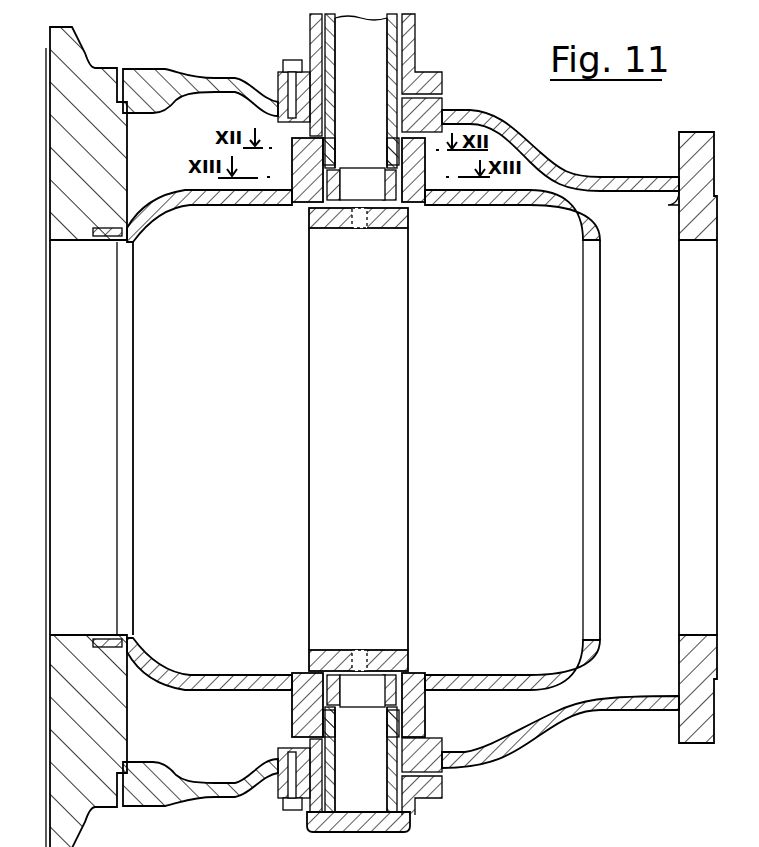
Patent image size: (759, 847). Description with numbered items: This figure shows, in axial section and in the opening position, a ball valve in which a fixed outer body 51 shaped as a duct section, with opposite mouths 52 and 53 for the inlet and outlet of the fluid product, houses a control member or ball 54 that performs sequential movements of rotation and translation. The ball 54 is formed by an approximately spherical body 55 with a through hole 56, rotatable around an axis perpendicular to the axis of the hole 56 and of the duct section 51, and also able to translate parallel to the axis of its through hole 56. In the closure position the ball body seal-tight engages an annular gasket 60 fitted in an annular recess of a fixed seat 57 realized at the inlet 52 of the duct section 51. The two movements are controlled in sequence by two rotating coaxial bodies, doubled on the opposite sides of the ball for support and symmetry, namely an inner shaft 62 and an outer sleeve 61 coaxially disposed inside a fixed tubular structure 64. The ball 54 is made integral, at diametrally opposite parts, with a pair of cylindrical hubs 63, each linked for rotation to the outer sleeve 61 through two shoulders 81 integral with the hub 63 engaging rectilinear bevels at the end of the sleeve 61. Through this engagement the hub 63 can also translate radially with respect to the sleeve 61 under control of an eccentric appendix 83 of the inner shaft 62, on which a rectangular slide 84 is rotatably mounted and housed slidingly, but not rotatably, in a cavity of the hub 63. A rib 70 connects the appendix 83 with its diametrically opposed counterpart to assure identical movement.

The fixed outer body 51 is at (557, 164).
The inlet mouth 52 is at (688, 228).
The outlet mouth 53 is at (88, 100).
The ball 54 is at (250, 691).
The spherical body 55 is at (499, 691).
The through hole 56 is at (483, 675).
The fixed seat 57 is at (128, 655).
The annular gasket 60 is at (108, 240).
The outer sleeve 61 is at (326, 40).
The inner shaft 62 is at (352, 32).
The cylindrical hub 63 is at (300, 170).
The fixed tubular structure 64 is at (406, 38).
The rib 70 is at (398, 398).
The shoulders 81 is at (322, 165).
The eccentric appendix 83 is at (367, 192).
The rectangular slide 84 is at (415, 196).